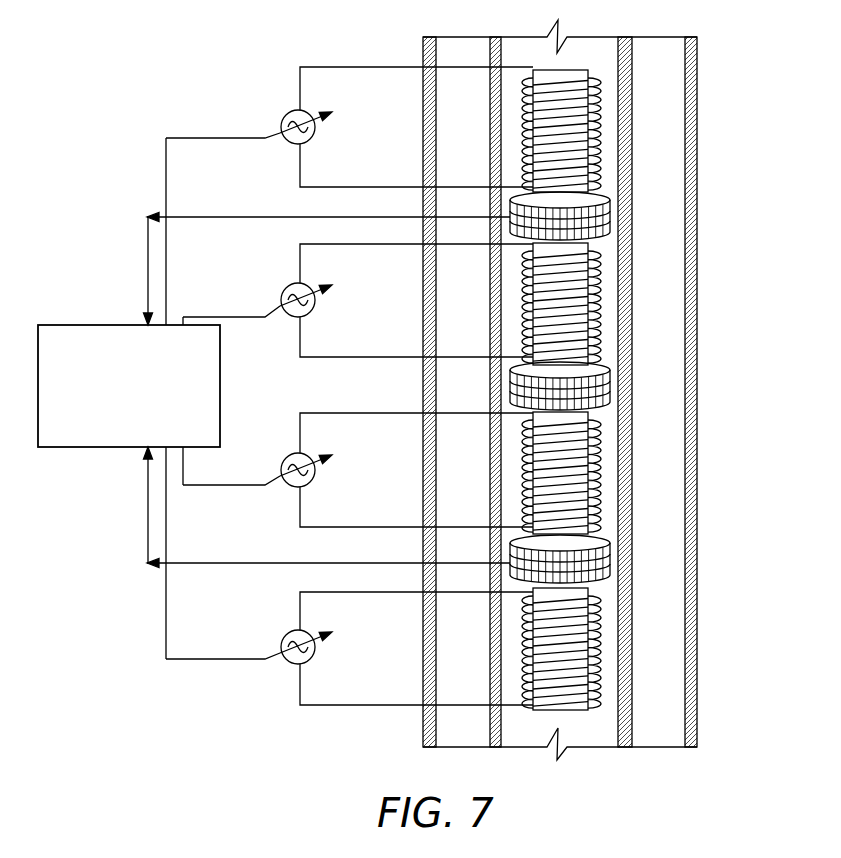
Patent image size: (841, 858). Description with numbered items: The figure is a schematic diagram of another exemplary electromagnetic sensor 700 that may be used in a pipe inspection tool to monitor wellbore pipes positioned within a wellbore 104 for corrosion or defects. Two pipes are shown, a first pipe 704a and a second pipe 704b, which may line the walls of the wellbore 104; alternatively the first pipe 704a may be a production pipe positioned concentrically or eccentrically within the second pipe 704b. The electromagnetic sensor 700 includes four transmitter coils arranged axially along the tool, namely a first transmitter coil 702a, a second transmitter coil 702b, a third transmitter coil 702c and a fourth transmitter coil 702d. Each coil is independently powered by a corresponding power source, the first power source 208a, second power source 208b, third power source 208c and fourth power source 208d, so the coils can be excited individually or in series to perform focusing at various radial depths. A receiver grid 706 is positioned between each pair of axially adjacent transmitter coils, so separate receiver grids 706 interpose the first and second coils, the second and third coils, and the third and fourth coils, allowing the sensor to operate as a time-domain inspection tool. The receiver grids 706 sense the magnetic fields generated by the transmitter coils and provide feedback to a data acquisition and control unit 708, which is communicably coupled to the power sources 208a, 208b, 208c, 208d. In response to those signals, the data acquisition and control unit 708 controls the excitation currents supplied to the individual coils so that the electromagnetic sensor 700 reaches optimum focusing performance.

The electromagnetic sensor 700 is at (268, 65).
The wellbore 104 is at (590, 50).
The first pipe 704a is at (632, 116).
The second pipe 704b is at (698, 152).
The first transmitter coil 702a is at (609, 101).
The second transmitter coil 702b is at (607, 285).
The third transmitter coil 702c is at (607, 446).
The fourth transmitter coil 702d is at (607, 623).
The receiver grid 706 is at (606, 215).
The first power source 208a is at (318, 130).
The second power source 208b is at (318, 303).
The third power source 208c is at (318, 473).
The fourth power source 208d is at (318, 650).
The data acquisition and control unit 708 is at (129, 386).